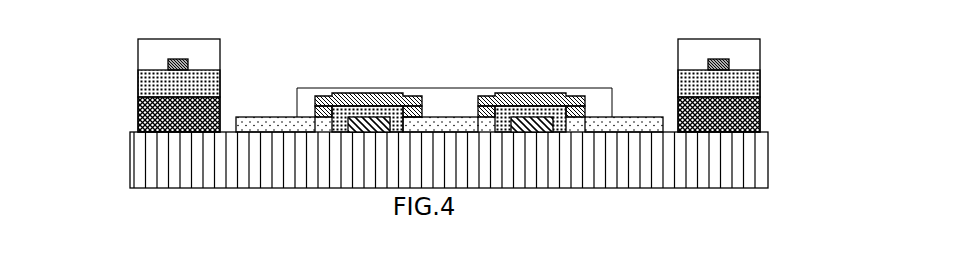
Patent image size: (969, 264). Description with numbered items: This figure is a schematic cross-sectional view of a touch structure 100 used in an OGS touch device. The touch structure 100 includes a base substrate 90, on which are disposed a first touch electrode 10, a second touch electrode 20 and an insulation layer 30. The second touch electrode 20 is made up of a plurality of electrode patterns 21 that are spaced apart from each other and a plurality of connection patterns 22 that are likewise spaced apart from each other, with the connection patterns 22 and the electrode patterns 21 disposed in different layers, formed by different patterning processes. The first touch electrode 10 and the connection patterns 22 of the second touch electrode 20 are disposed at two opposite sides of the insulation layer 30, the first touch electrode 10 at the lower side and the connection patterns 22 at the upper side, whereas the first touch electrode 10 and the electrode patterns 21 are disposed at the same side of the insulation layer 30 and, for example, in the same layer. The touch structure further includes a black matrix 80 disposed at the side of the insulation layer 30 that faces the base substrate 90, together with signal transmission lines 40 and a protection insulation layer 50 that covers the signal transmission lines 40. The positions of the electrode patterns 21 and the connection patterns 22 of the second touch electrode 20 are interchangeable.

The touch structure 100 is at (537, 41).
The first touch electrode 10 is at (368, 93).
The second touch electrode 20 is at (443, 60).
The electrode patterns 21 is at (445, 120).
The connection patterns 22 is at (421, 98).
The insulation layer 30 is at (221, 87).
The signal transmission lines 40 is at (138, 88).
The protection insulation layer 50 is at (170, 44).
The black matrix 80 is at (137, 124).
The base substrate 90 is at (163, 157).